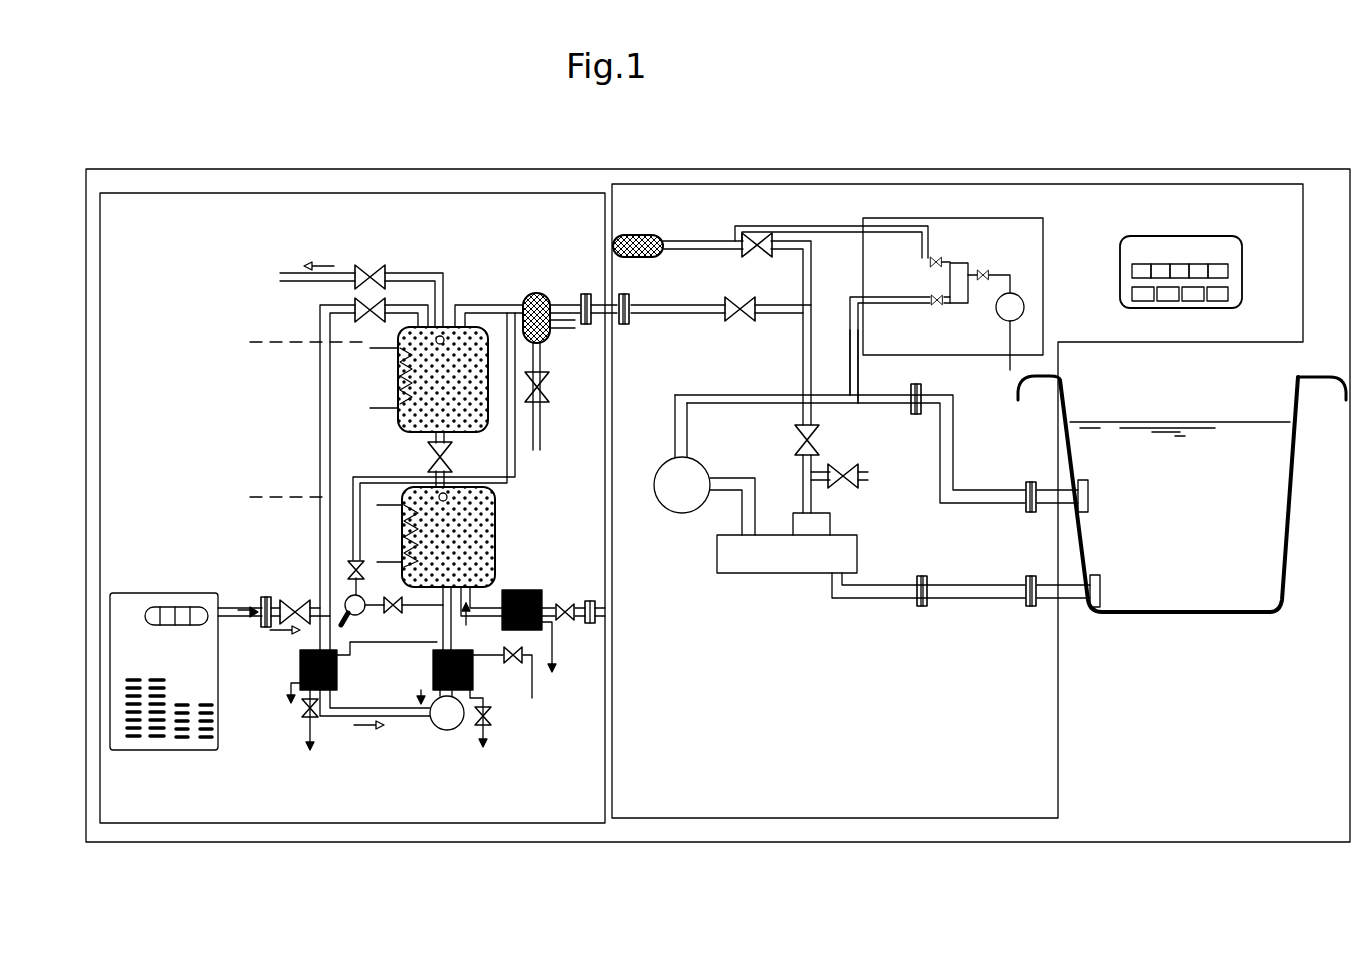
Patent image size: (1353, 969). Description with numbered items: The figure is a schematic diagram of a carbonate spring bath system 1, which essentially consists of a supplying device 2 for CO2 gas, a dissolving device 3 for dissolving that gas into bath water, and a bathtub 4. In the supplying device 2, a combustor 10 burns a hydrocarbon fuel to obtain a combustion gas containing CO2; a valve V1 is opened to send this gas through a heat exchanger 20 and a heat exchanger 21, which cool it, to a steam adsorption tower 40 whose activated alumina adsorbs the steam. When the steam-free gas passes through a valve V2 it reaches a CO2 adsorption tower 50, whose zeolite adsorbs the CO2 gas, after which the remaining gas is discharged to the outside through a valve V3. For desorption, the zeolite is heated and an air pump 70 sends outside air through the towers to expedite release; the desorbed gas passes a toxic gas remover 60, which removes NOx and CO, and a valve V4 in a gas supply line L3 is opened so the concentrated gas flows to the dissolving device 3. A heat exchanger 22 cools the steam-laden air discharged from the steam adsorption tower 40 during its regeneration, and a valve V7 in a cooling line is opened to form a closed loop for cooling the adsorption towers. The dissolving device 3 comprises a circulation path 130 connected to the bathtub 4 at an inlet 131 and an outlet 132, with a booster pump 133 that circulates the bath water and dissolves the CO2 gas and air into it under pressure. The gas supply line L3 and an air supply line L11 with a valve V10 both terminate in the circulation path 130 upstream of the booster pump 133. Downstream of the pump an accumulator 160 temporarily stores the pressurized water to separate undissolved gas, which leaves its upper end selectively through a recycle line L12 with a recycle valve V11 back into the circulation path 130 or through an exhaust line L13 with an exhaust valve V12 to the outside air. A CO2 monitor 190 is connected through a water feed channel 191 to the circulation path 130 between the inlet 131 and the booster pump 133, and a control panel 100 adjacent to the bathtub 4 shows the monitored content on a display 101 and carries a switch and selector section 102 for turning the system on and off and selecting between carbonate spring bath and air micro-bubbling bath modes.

The carbonate spring bath system 1 is at (527, 169).
The supplying device 2 is at (368, 193).
The dissolving device 3 is at (690, 184).
The bathtub 4 is at (1190, 602).
The combustor 10 is at (138, 603).
The heat exchanger 20 is at (300, 668).
The heat exchanger 21 is at (478, 690).
The heat exchanger 22 is at (533, 592).
The steam adsorption tower 40 is at (470, 535).
The CO2 adsorption tower 50 is at (437, 385).
The toxic gas remover 60 is at (531, 291).
The air pump 70 is at (362, 616).
The control panel 100 is at (1212, 261).
The display 101 is at (1225, 272).
The switch and selector section 102 is at (1225, 295).
The circulation path 130 is at (680, 423).
The inlet 131 is at (1090, 497).
The outlet 132 is at (1100, 590).
The booster pump 133 is at (677, 505).
The accumulator 160 is at (750, 568).
The CO2 monitor 190 is at (1043, 318).
The water feed channel 191 is at (852, 370).
The valve V1 is at (302, 605).
The valve V2 is at (450, 457).
The valve V3 is at (365, 267).
The valve V4 is at (731, 322).
The valve V7 is at (377, 318).
The valve V10 is at (748, 258).
The recycle valve V11 is at (818, 428).
The exhaust valve V12 is at (855, 472).
The gas supply line L3 is at (667, 318).
The air supply line L11 is at (688, 241).
The recycle line L12 is at (803, 476).
The exhaust line L13 is at (860, 479).